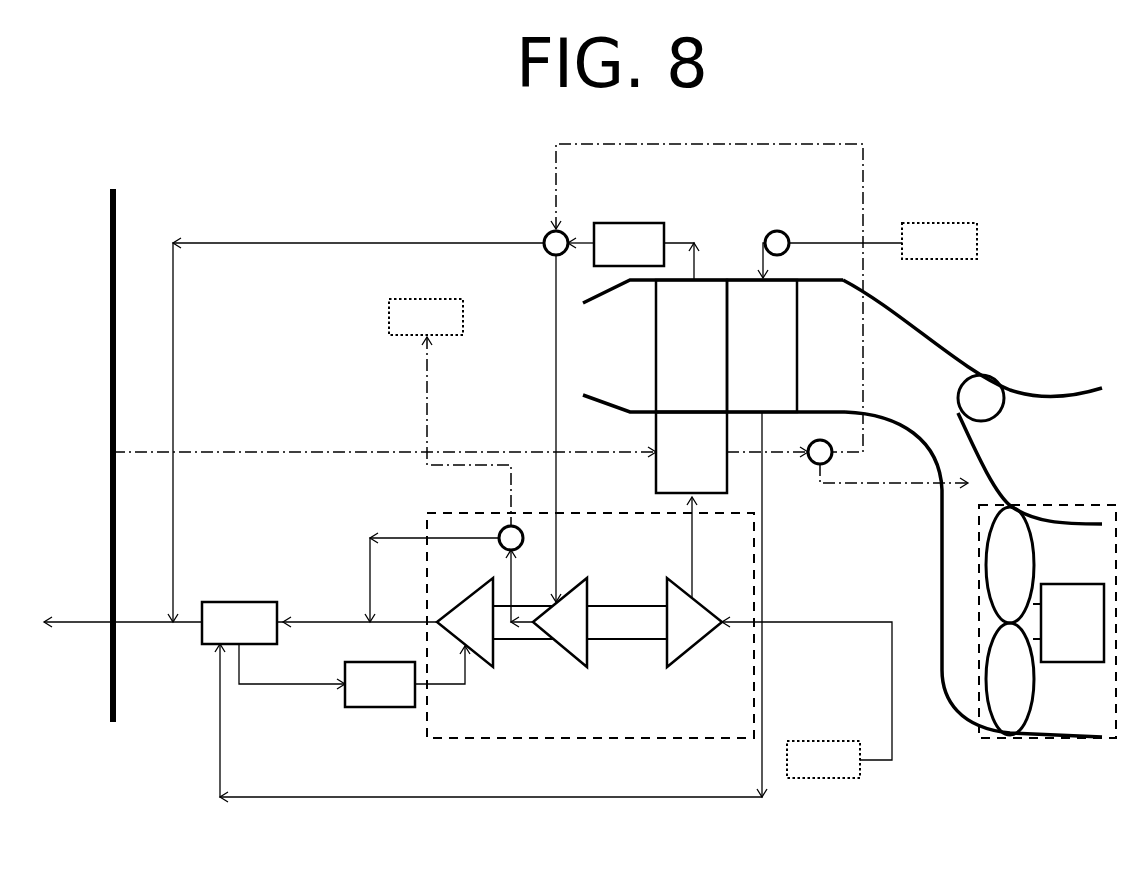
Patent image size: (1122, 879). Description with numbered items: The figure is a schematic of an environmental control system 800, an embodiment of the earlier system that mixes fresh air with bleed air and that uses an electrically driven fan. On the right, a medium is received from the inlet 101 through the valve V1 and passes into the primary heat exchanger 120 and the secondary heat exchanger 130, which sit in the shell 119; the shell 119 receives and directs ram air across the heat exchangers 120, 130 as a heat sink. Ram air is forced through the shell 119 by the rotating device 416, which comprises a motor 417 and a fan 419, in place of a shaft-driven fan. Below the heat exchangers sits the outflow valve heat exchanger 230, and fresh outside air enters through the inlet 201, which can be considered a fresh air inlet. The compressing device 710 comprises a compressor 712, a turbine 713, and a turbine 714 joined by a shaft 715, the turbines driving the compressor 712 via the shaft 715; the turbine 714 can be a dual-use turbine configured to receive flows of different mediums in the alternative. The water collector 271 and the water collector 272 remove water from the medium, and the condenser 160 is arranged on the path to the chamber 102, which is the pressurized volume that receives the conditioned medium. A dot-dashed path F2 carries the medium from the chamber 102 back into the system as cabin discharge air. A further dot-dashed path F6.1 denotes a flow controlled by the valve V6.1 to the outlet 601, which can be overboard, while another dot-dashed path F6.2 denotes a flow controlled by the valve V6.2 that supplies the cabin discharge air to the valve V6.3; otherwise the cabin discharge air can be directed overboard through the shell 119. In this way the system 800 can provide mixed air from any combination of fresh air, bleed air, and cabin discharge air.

The environmental control system 800 is at (1042, 130).
The chamber 102 is at (110, 188).
The inlet 101 is at (939, 241).
The outlet 601 is at (426, 317).
The inlet 201 is at (823, 759).
The condenser 160 is at (221, 635).
The water collector 271 is at (611, 256).
The water collector 272 is at (362, 697).
The secondary heat exchanger 130 is at (673, 360).
The primary heat exchanger 120 is at (744, 360).
The outflow valve heat exchanger 230 is at (673, 466).
The turbine 713 is at (456, 634).
The turbine 714 is at (550, 634).
The compressor 712 is at (671, 634).
The shaft 715 is at (609, 642).
The compressing device 710 is at (612, 740).
The motor 417 is at (1054, 635).
The fan 419 is at (1021, 514).
The rotating device 416 is at (984, 739).
The shell 119 is at (985, 362).
The valve V1 is at (766, 233).
The valve V6.1 is at (500, 528).
The valve V6.2 is at (811, 470).
The valve V6.3 is at (545, 233).
The path F2 is at (323, 450).
The path F6.1 is at (430, 386).
The path F6.2 is at (867, 151).